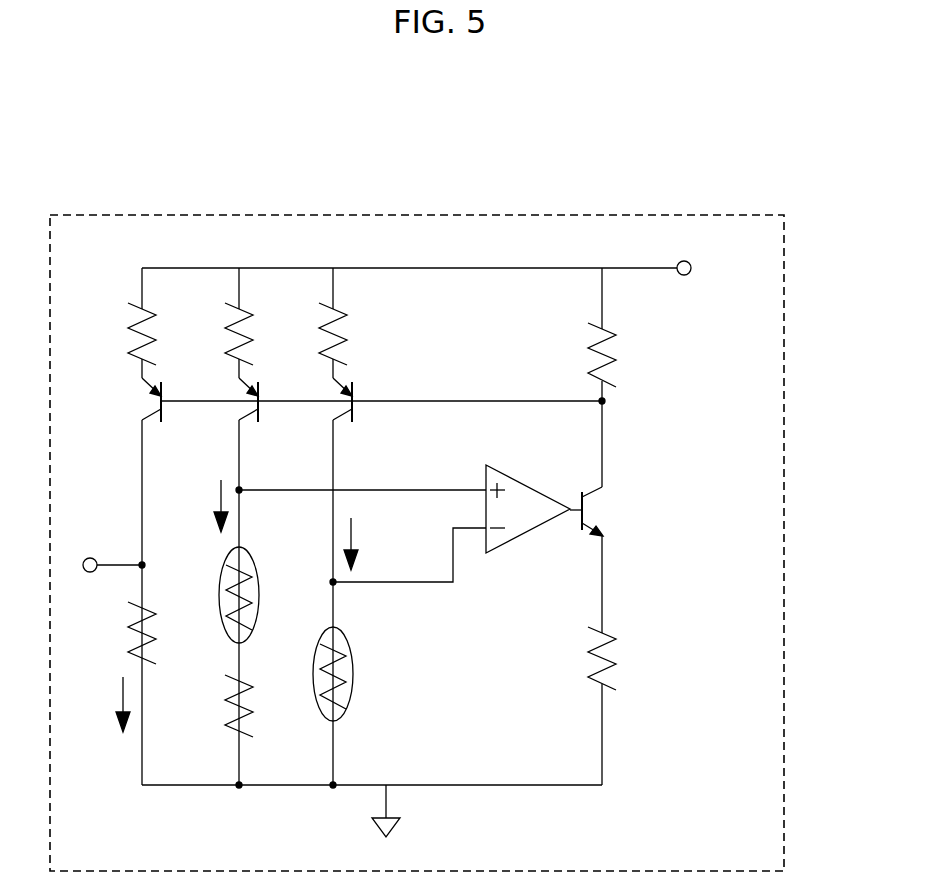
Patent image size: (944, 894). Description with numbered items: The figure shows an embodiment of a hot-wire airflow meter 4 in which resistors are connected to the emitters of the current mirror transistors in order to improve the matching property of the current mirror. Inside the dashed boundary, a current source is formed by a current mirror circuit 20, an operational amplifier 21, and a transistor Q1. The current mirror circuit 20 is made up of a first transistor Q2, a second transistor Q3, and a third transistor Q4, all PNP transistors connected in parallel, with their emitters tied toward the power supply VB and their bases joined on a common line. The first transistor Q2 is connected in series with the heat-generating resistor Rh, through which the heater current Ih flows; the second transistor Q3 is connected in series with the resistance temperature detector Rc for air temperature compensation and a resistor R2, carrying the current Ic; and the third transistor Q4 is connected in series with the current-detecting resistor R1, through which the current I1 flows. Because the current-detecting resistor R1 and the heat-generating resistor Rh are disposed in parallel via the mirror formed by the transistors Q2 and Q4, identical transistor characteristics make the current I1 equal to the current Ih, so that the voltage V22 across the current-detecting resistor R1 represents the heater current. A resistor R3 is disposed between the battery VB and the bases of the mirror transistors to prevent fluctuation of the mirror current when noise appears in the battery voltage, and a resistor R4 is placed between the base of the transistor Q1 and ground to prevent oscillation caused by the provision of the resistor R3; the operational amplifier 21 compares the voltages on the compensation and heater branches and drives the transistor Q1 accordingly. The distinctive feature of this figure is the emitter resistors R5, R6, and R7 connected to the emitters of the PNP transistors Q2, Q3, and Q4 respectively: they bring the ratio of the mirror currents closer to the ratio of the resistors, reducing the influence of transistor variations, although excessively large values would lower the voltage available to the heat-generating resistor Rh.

The airflow meter 4 is at (784, 356).
The current mirror circuit 20 is at (299, 314).
The operational amplifier 21 is at (520, 532).
The power supply VB is at (702, 269).
The voltage across current-detecting resistor V22 is at (106, 552).
The current-detecting resistor R1 is at (151, 672).
The resistor R2 is at (250, 724).
The resistor R3 is at (617, 352).
The resistor R4 is at (617, 659).
The emitter resistor R5 is at (351, 327).
The emitter resistor R6 is at (257, 327).
The emitter resistor R7 is at (160, 327).
The resistance temperature detector Rc is at (259, 598).
The heat-generating resistor Rh is at (353, 676).
The transistor Q1 is at (607, 512).
The first transistor Q2 is at (349, 387).
The second transistor Q3 is at (255, 387).
The third transistor Q4 is at (158, 387).
The current I1 is at (113, 704).
The current Ic is at (339, 506).
The current Ih is at (408, 551).